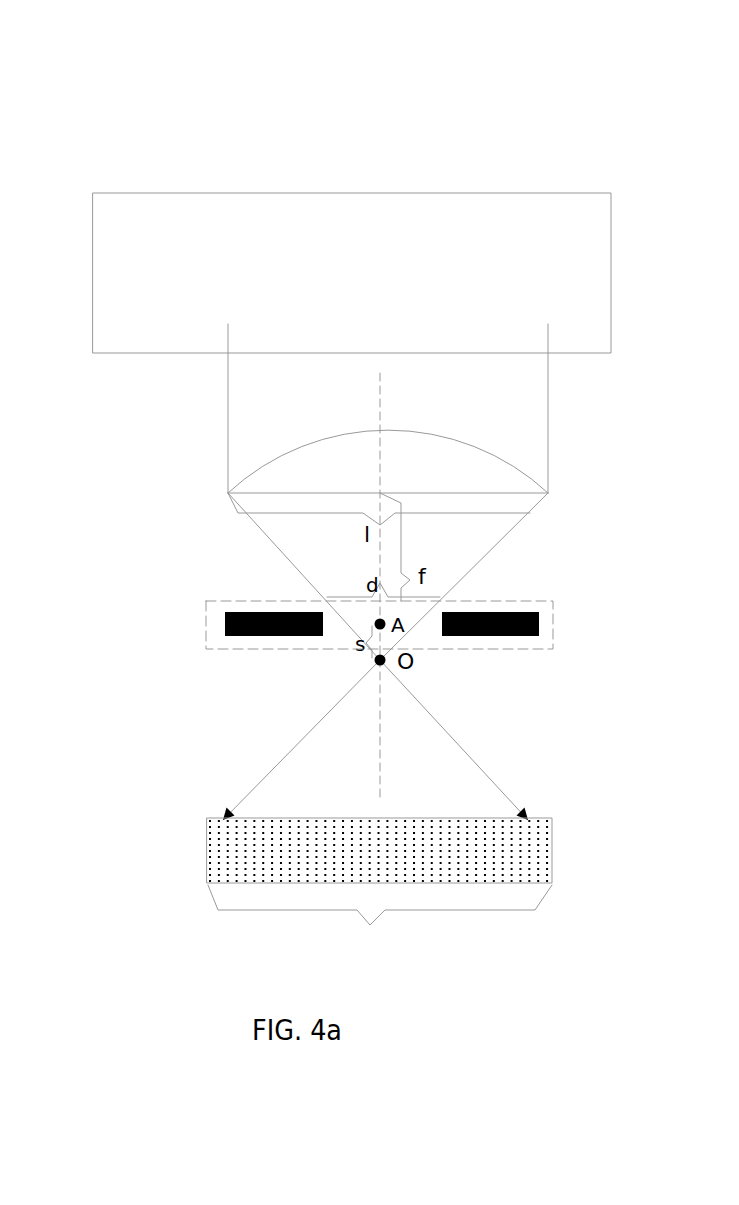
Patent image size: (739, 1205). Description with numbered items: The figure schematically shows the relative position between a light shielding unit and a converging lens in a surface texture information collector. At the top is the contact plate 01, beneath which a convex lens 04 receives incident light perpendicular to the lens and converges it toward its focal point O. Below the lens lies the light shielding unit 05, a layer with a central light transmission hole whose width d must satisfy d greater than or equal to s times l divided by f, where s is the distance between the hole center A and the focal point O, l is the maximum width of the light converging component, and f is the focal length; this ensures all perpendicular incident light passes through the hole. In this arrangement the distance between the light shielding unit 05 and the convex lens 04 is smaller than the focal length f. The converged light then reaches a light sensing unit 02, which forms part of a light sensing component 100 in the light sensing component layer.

The contact plate 01 is at (357, 193).
The convex lens 04 is at (275, 457).
The light shielding unit 05 is at (205, 637).
The light sensing unit 02 is at (233, 853).
The light sensing component 100 is at (380, 929).